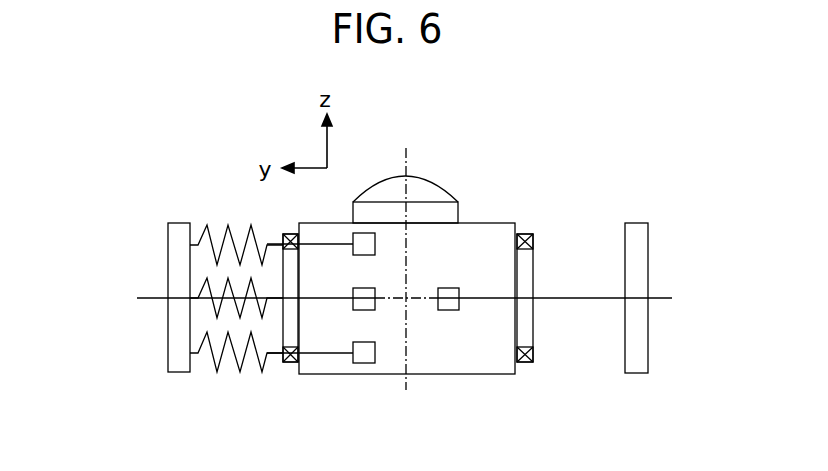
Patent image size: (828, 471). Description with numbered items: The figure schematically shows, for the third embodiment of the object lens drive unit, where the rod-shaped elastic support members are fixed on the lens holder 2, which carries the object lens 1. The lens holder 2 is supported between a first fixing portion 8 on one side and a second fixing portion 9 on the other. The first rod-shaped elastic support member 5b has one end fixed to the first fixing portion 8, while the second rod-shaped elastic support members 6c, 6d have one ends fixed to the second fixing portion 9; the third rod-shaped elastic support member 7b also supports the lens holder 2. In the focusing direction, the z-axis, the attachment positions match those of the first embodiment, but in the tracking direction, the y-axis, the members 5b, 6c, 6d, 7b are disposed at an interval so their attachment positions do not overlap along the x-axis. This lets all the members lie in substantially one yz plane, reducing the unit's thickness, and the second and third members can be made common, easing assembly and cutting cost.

The object lens 1 is at (422, 192).
The lens holder 2 is at (460, 255).
The first rod-shaped elastic support member 5b is at (542, 297).
The second rod-shaped elastic support member 6c is at (230, 230).
The second rod-shaped elastic support member 6d is at (242, 370).
The third rod-shaped elastic support member 7b is at (207, 278).
The first fixing portion 8 is at (635, 245).
The second fixing portion 9 is at (178, 230).